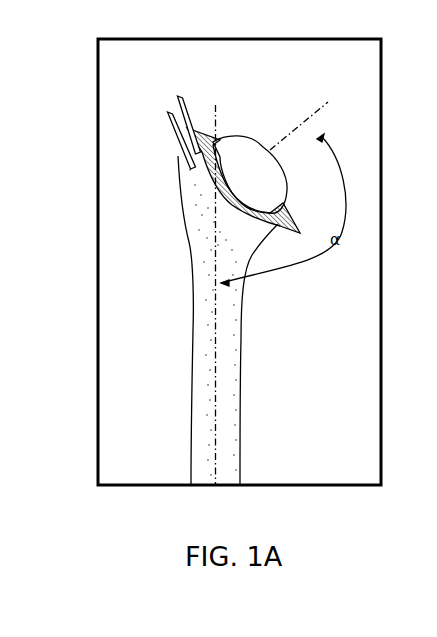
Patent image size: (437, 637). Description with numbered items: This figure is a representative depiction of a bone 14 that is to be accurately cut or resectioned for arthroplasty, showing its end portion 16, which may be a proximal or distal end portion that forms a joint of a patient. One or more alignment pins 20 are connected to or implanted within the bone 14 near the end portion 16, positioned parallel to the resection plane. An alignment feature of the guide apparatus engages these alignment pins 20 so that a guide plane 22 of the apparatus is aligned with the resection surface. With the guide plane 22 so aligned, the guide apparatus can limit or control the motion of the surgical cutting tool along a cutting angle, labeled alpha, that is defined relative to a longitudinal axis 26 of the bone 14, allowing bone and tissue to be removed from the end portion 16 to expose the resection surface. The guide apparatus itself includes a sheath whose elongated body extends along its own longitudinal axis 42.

The bone 14 is at (198, 392).
The end portion 16 is at (156, 186).
The alignment pins 20 is at (178, 98).
The guide plane 22 is at (284, 205).
The longitudinal axis 26 is at (215, 362).
The longitudinal axis 42 is at (432, 232).